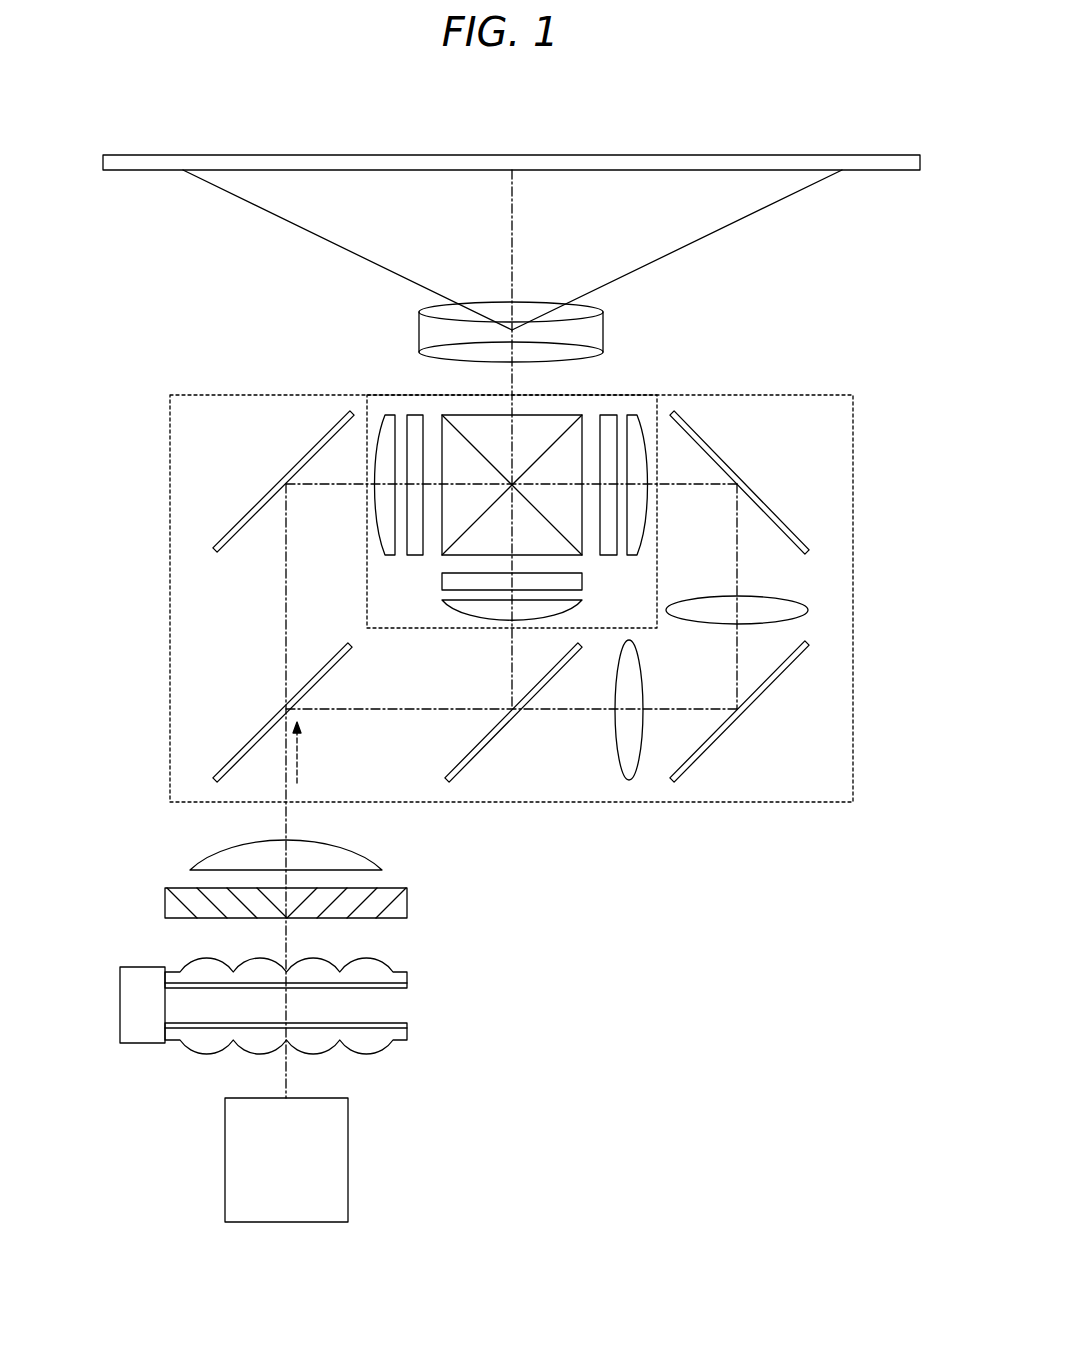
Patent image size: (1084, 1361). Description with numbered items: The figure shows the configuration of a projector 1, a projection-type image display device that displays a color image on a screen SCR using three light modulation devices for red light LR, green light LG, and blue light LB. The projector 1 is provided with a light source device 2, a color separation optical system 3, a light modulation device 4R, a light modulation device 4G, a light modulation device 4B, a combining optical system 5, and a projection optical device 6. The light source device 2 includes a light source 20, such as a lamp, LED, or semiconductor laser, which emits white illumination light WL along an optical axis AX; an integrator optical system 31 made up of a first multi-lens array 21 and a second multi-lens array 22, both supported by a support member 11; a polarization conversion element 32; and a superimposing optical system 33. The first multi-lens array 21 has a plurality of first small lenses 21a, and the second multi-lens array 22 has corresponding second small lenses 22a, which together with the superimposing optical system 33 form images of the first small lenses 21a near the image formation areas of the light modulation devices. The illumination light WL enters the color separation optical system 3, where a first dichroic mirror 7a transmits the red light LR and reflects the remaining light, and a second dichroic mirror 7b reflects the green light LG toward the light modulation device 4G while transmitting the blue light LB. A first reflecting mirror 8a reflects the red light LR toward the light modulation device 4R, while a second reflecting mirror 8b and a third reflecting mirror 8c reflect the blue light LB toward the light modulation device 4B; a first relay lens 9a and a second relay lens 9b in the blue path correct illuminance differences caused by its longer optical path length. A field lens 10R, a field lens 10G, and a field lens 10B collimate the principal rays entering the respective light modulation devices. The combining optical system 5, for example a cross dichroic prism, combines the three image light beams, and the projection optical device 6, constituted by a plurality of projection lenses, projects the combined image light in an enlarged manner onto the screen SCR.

The projector 1 is at (880, 258).
The light source device 2 is at (540, 822).
The color separation optical system 3 is at (170, 422).
The light modulation device 4R is at (410, 414).
The light modulation device 4G is at (442, 581).
The light modulation device 4B is at (611, 414).
The combining optical system 5 is at (533, 424).
The projection optical device 6 is at (492, 310).
The first dichroic mirror 7a is at (247, 746).
The second dichroic mirror 7b is at (494, 746).
The first reflecting mirror 8a is at (262, 503).
The second reflecting mirror 8b is at (764, 694).
The third reflecting mirror 8c is at (760, 502).
The first relay lens 9a is at (613, 732).
The second relay lens 9b is at (762, 598).
The field lens 10R is at (392, 414).
The field lens 10G is at (442, 611).
The field lens 10B is at (636, 414).
The support member 11 is at (132, 1030).
The light source 20 is at (348, 1146).
The first multi-lens array 21 is at (408, 1030).
The first small lens 21a is at (210, 1050).
The second multi-lens array 22 is at (408, 983).
The second small lens 22a is at (208, 965).
The integrator optical system 31 is at (489, 975).
The polarization conversion element 32 is at (408, 903).
The superimposing optical system 33 is at (372, 850).
The screen SCR is at (880, 157).
The optical axis AX is at (287, 1080).
The illumination light WL is at (303, 763).
The red light LR is at (285, 626).
The green light LG is at (510, 663).
The blue light LB is at (737, 668).